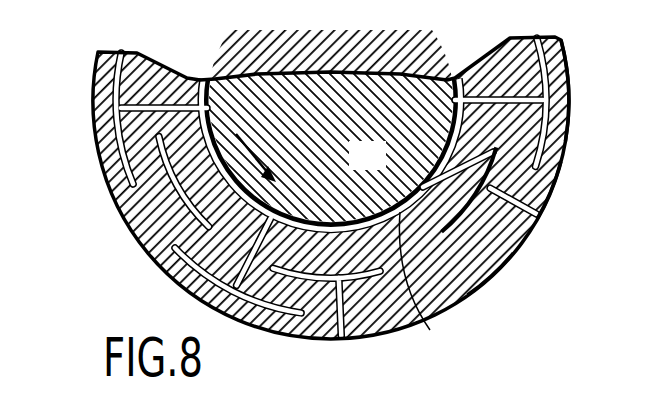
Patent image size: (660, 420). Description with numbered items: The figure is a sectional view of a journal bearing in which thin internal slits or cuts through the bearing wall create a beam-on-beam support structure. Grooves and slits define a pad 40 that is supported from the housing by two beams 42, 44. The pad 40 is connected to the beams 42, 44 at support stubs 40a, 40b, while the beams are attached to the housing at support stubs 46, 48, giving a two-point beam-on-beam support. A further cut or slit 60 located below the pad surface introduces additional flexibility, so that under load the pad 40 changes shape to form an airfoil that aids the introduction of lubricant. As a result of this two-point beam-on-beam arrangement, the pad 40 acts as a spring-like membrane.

The pad 40 is at (443, 192).
The support stub 40a is at (430, 330).
The support stub 40b is at (568, 66).
The beam 42 is at (508, 275).
The beam 44 is at (523, 153).
The support stub 46 is at (521, 247).
The support stub 48 is at (557, 183).
The cut or slit 60 is at (493, 178).